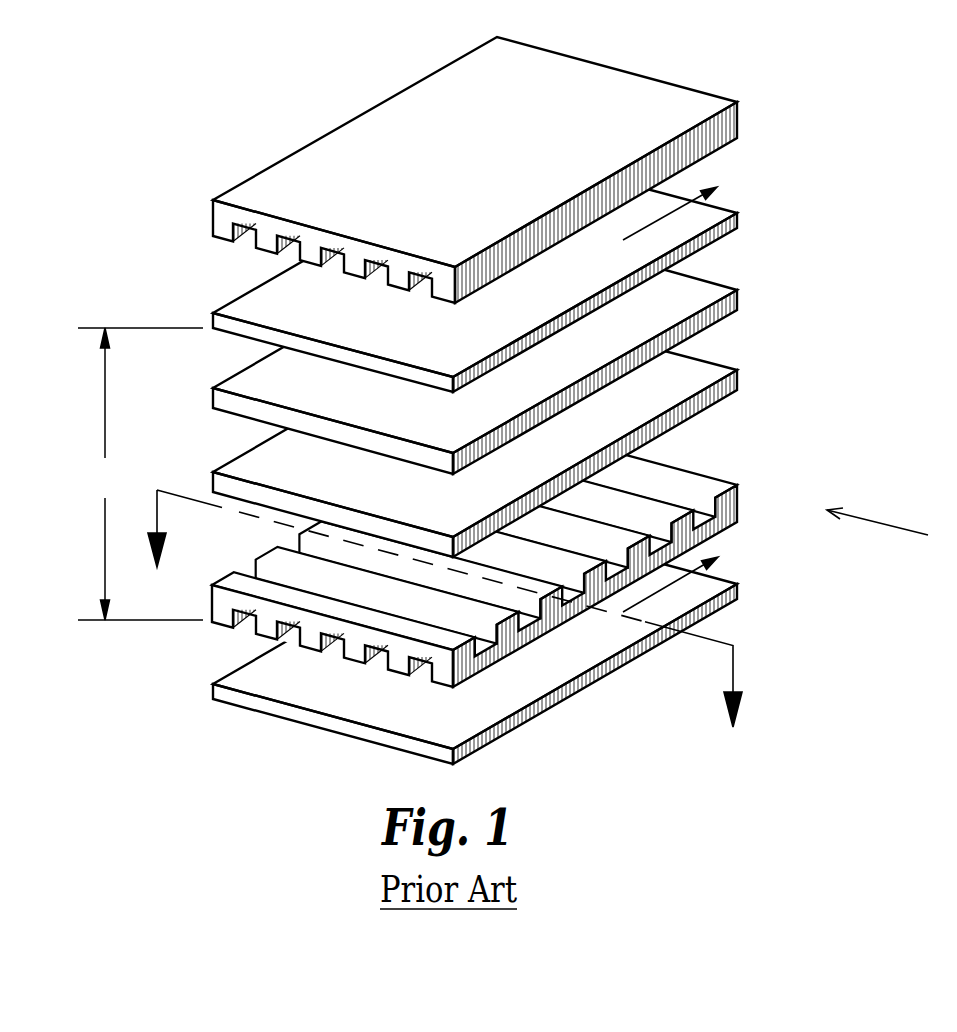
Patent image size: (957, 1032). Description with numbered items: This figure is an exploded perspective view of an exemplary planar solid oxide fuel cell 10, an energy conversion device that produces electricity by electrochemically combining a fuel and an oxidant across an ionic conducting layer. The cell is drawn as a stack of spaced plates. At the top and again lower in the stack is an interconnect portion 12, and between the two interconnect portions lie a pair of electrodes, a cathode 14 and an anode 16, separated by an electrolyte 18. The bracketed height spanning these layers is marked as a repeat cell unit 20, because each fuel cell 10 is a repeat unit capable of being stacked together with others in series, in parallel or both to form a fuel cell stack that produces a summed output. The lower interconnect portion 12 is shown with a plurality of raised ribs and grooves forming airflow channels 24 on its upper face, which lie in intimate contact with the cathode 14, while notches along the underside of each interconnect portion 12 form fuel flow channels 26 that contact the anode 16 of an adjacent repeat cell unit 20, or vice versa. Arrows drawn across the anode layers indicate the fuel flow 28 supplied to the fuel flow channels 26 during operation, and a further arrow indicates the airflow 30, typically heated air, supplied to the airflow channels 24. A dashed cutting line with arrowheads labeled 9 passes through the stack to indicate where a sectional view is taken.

The planar fuel cell 10 is at (188, 60).
The interconnect portion 12 is at (493, 362).
The cathode 14 is at (740, 379).
The anode 16 is at (740, 220).
The electrolyte 18 is at (740, 297).
The repeat cell unit 20 is at (140, 474).
The airflow channels 24 is at (708, 503).
The fuel flow channels 26 is at (247, 614).
The fuel flow 28 is at (688, 204).
The airflow 30 is at (887, 523).
The section line 9- 9 is at (443, 631).